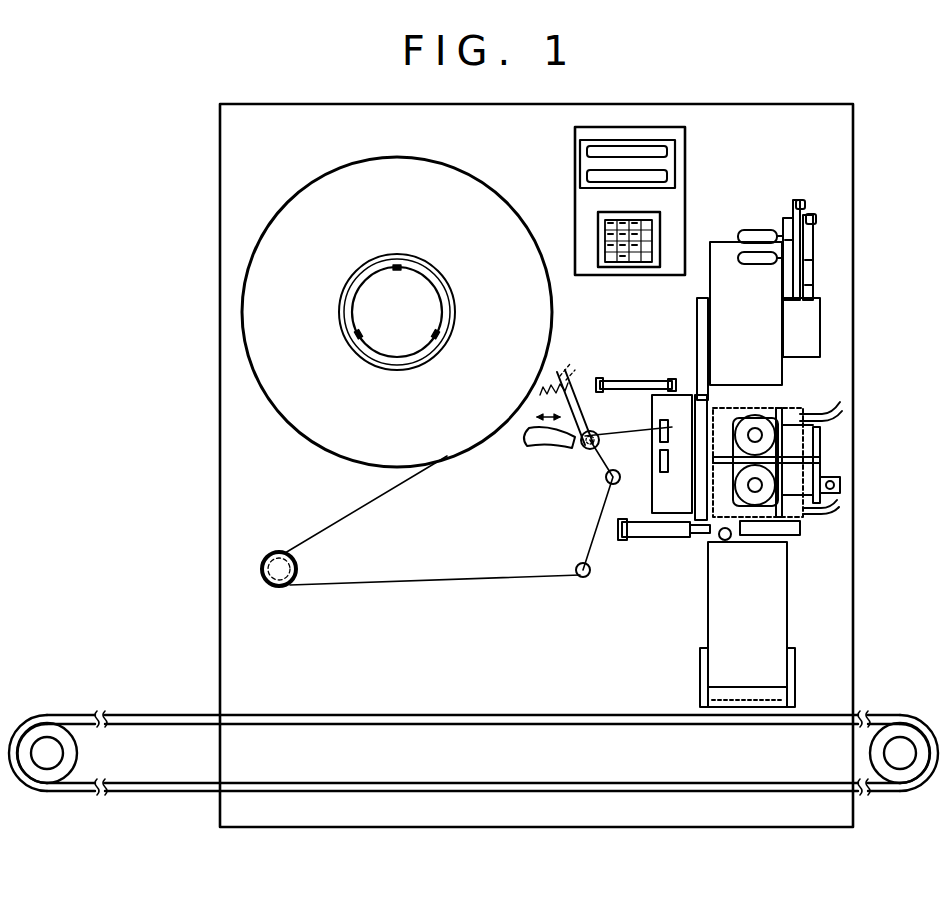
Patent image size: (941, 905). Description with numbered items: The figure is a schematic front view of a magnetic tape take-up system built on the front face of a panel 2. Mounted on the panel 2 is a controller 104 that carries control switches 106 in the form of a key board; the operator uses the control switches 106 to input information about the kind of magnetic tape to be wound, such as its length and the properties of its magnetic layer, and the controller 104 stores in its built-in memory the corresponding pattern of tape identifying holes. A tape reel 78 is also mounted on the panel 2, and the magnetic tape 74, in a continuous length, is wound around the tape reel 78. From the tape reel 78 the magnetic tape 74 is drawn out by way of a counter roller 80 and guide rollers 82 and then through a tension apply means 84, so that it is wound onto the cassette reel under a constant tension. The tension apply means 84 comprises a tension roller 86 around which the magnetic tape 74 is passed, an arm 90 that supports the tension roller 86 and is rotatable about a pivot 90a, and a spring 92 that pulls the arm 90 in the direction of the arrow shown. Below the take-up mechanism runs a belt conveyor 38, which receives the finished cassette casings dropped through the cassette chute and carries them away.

The panel 2 is at (856, 158).
The belt conveyor 38 is at (415, 713).
The magnetic tape 74 is at (464, 583).
The tape reel 78 is at (535, 239).
The counter roller 80 is at (281, 591).
The guide rollers 82 is at (607, 483).
The tension apply means 84 is at (528, 453).
The tension roller 86 is at (566, 452).
The arm 90 is at (587, 390).
The pivot 90a is at (580, 398).
The spring 92 is at (548, 383).
The controller 104 is at (690, 149).
The control switches 106 is at (659, 213).